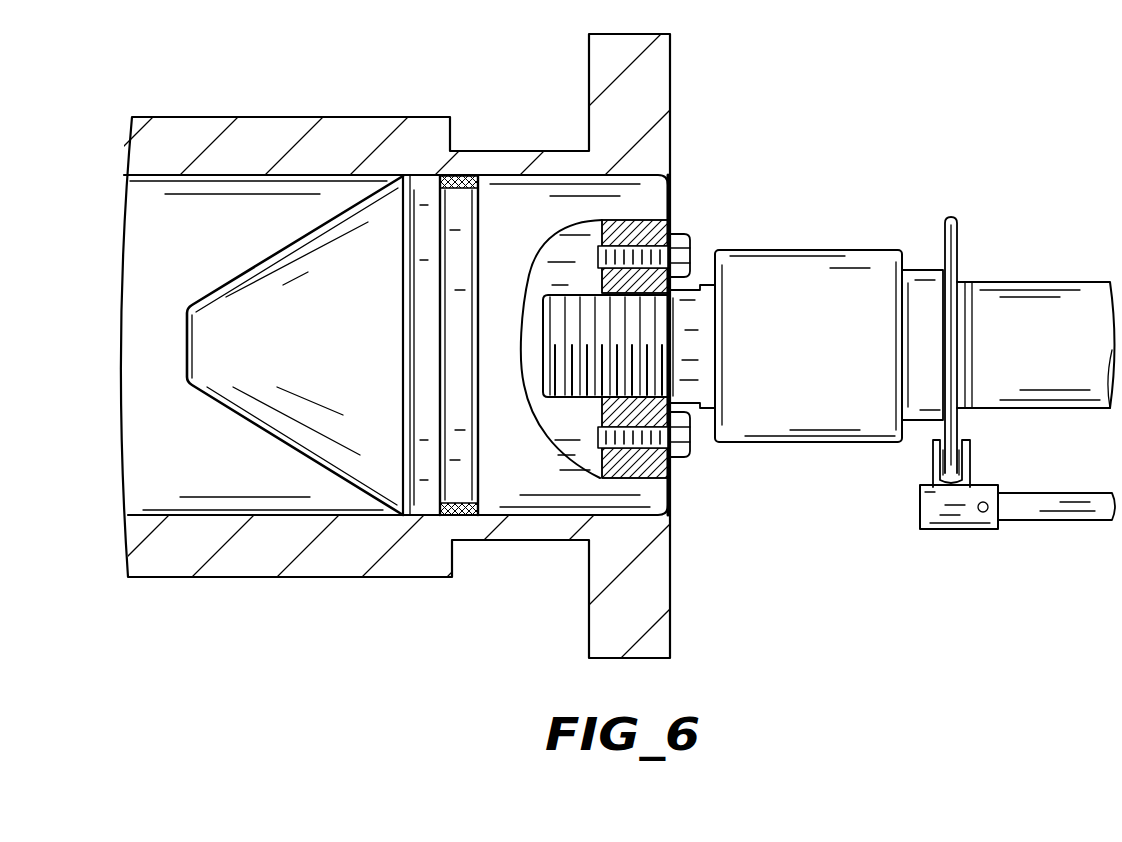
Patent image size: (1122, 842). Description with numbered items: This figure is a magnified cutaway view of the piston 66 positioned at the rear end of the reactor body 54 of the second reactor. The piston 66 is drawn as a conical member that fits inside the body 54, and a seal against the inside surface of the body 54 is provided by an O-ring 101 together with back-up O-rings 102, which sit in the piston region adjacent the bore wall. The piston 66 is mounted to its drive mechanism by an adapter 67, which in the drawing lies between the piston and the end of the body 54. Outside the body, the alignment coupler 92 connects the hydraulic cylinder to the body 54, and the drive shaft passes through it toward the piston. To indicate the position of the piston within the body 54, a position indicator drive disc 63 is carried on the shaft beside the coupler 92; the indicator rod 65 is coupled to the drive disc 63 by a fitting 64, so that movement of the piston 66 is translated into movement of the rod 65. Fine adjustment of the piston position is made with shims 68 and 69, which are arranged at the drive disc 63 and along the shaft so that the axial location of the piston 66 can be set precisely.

The reactor body 54 is at (225, 152).
The position indicator drive disc 63 is at (952, 260).
The fitting 64 is at (920, 497).
The indicator rod 65 is at (1050, 507).
The piston 66 is at (296, 408).
The adapter 67 is at (603, 398).
The shim 68 is at (963, 382).
The shim 69 is at (967, 330).
The alignment coupler 92 is at (802, 295).
The O-ring 101 is at (453, 175).
The back-up O-rings 102 is at (462, 175).